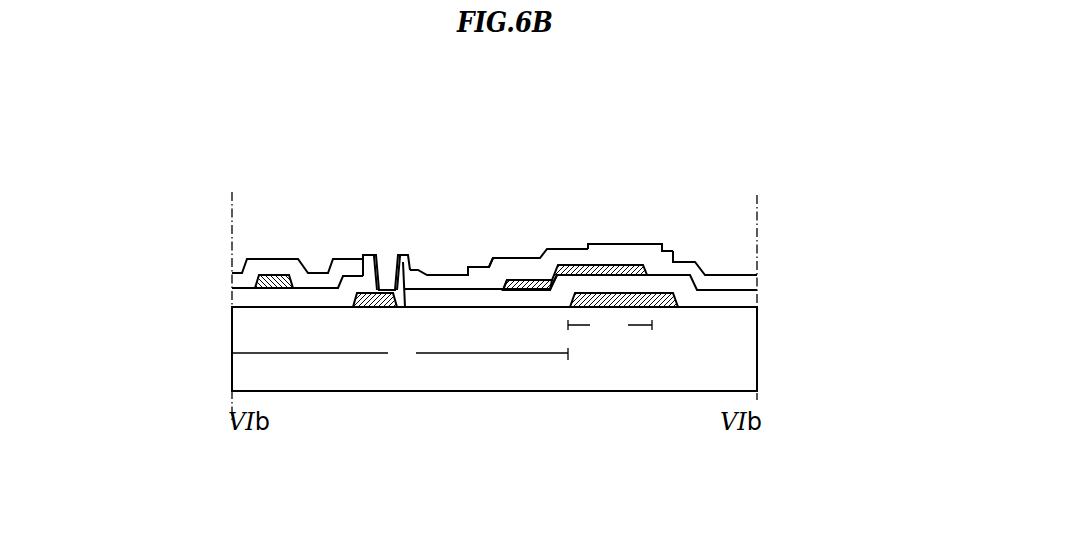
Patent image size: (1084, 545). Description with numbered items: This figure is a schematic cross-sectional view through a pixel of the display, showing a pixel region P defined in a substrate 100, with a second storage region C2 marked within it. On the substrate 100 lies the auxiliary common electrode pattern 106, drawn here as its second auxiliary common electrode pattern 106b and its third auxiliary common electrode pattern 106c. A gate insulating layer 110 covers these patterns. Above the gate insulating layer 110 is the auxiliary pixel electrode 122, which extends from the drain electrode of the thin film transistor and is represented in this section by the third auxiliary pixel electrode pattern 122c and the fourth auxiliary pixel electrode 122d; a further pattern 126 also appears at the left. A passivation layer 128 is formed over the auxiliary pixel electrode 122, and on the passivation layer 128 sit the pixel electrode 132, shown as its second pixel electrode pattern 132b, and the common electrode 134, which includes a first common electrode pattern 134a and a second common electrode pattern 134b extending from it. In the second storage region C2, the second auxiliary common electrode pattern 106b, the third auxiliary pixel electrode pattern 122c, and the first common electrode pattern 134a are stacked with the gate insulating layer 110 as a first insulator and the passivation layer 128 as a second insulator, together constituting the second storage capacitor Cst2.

The substrate 100 is at (733, 380).
The auxiliary common electrode pattern 106 is at (521, 399).
The second auxiliary common electrode pattern 106b is at (631, 371).
The third auxiliary common electrode pattern 106c is at (374, 308).
The gate insulating layer 110 is at (443, 293).
The auxiliary pixel electrode 122 is at (601, 228).
The third auxiliary pixel electrode pattern 122c is at (634, 264).
The fourth auxiliary pixel electrode 122d is at (517, 278).
The conductive pattern 126 is at (261, 273).
The passivation layer 128 is at (314, 262).
The pixel electrode 132 is at (503, 206).
The second pixel electrode pattern 132b is at (497, 280).
The common electrode 134 is at (500, 205).
The first common electrode pattern 134a is at (603, 243).
The second common electrode pattern 134b is at (377, 254).
The second storage capacitor Cst2 is at (686, 291).
The pixel region P is at (400, 356).
The second storage region C2 is at (610, 325).